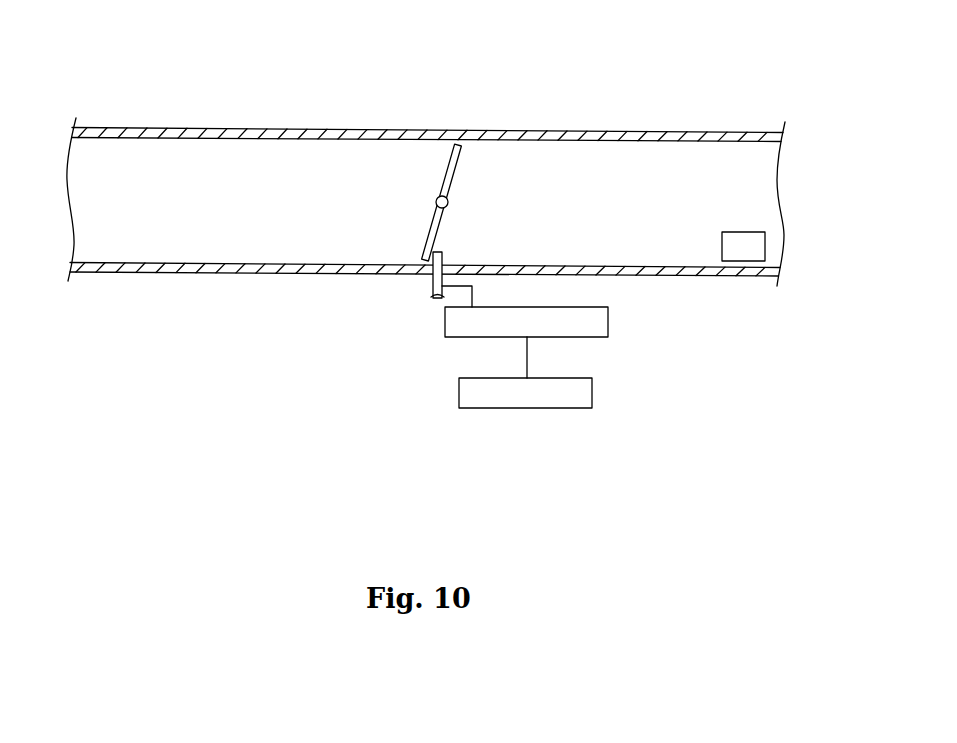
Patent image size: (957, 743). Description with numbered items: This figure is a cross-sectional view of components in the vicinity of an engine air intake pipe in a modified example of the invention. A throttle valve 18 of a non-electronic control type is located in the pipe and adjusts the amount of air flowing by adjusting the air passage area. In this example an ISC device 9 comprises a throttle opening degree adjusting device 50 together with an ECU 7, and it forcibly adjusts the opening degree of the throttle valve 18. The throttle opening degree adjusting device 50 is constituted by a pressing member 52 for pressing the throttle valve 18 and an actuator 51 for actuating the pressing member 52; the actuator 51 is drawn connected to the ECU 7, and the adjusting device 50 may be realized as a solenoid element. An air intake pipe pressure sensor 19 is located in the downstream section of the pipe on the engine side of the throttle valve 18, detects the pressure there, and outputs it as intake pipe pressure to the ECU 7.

The ISC device 9 is at (657, 105).
The throttle valve 18 is at (462, 167).
The pressing member 52 is at (432, 291).
The throttle opening degree adjusting device 50 is at (433, 317).
The actuator 51 is at (608, 322).
The ECU 7 is at (592, 393).
The air intake pipe pressure sensor 19 is at (733, 261).